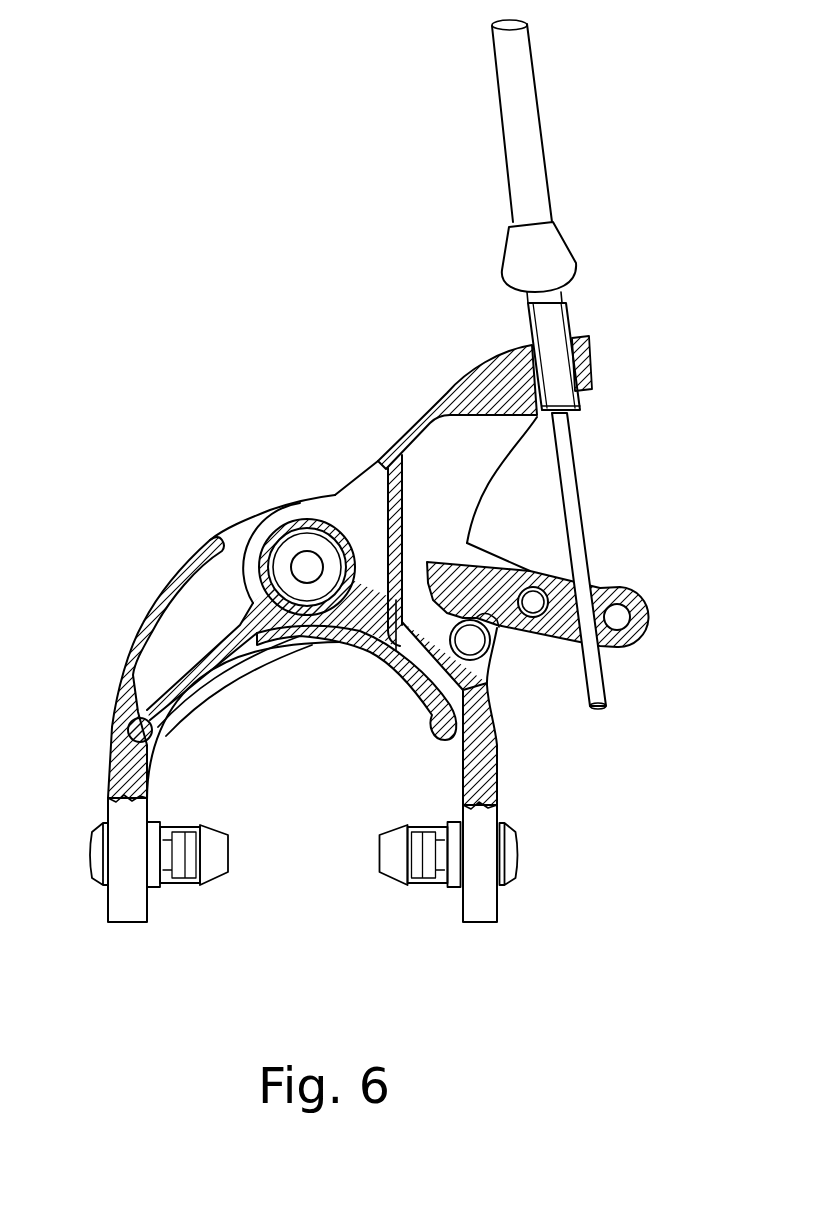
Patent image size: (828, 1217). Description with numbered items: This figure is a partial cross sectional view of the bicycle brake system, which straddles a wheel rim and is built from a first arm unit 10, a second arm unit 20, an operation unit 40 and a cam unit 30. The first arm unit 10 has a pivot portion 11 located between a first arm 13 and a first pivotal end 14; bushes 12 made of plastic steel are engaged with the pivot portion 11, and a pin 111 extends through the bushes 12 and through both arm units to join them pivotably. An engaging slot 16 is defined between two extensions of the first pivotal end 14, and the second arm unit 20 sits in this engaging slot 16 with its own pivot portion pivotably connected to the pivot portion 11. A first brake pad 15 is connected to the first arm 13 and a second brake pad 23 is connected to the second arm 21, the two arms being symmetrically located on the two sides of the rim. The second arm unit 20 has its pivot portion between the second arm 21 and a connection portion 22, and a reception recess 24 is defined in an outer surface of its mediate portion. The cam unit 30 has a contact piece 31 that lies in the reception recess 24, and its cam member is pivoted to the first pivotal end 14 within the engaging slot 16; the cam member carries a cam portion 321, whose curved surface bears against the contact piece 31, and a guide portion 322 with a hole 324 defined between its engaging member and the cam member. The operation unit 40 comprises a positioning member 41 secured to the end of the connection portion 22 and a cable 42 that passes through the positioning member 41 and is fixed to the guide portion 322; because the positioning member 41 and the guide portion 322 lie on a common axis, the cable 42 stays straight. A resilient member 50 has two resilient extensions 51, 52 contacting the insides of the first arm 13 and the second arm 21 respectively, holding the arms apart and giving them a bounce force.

The first arm unit 10 is at (217, 725).
The pivot portion 11 is at (316, 509).
The pin 111 is at (307, 567).
The bushes 12 is at (288, 550).
The first arm 13 is at (125, 815).
The first pivotal end 14 is at (515, 565).
The first brake pad 15 is at (210, 862).
The engaging slot 16 is at (233, 545).
The second arm unit 20 is at (457, 657).
The second arm 21 is at (485, 888).
The connection portion 22 is at (522, 362).
The second brake pad 23 is at (398, 868).
The reception recess 24 is at (460, 440).
The cam unit 30 is at (575, 665).
The contact piece 31 is at (490, 628).
The cam portion 321 is at (525, 681).
The guide portion 322 is at (640, 603).
The hole 324 is at (592, 588).
The operation unit 40 is at (580, 364).
The positioning member 41 is at (562, 257).
The cable 42 is at (570, 443).
The resilient member 50 is at (292, 713).
The resilient extension 51 is at (168, 695).
The resilient extension 52 is at (427, 710).